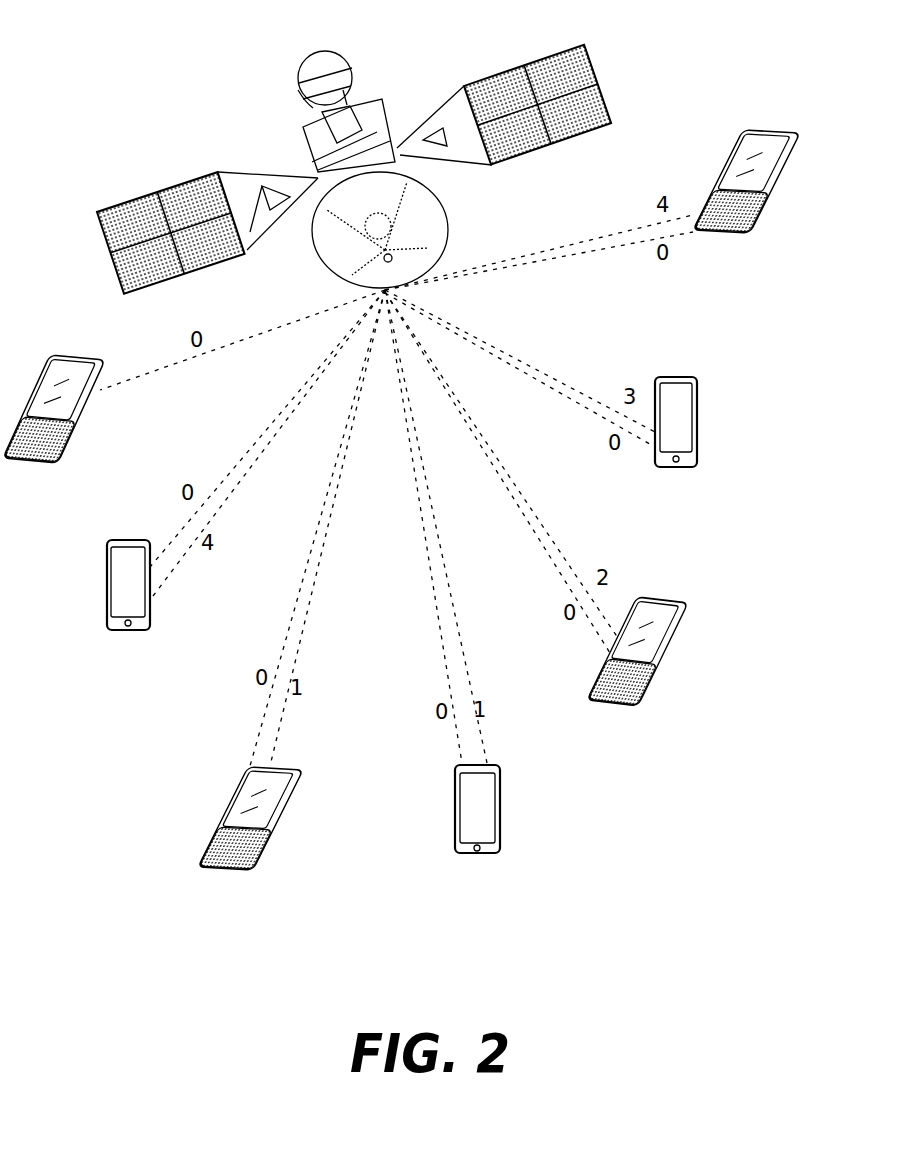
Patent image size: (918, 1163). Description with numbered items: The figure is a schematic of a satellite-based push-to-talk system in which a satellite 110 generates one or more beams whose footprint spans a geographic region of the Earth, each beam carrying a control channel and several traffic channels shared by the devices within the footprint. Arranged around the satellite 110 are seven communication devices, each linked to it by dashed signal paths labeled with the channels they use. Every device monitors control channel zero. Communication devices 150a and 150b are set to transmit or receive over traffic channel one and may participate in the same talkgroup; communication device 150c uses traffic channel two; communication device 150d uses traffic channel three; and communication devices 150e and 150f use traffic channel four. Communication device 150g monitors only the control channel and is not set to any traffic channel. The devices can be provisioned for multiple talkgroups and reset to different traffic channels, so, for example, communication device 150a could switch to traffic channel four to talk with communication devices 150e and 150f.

The satellite 110 is at (382, 112).
The communication device 150a is at (268, 848).
The communication device 150b is at (482, 855).
The communication device 150c is at (648, 683).
The communication device 150d is at (683, 468).
The communication device 150e is at (730, 243).
The communication device 150f is at (132, 630).
The communication device 150g is at (72, 437).